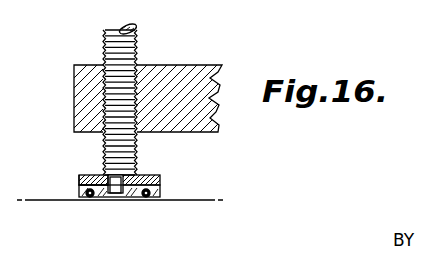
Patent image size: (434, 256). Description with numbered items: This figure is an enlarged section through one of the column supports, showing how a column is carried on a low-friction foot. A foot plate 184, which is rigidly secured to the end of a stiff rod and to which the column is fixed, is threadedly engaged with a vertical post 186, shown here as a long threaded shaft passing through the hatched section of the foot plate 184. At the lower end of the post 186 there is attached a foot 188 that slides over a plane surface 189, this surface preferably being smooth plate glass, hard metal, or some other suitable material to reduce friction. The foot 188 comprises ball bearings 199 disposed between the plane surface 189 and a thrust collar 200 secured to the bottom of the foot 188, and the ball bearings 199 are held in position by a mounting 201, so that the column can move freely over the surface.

The foot plate 184 is at (213, 65).
The vertical post 186 is at (139, 32).
The foot 188 is at (146, 176).
The plane surface 189 is at (200, 188).
The ball bearings 199 is at (147, 197).
The thrust collar 200 is at (80, 178).
The mounting 201 is at (80, 192).